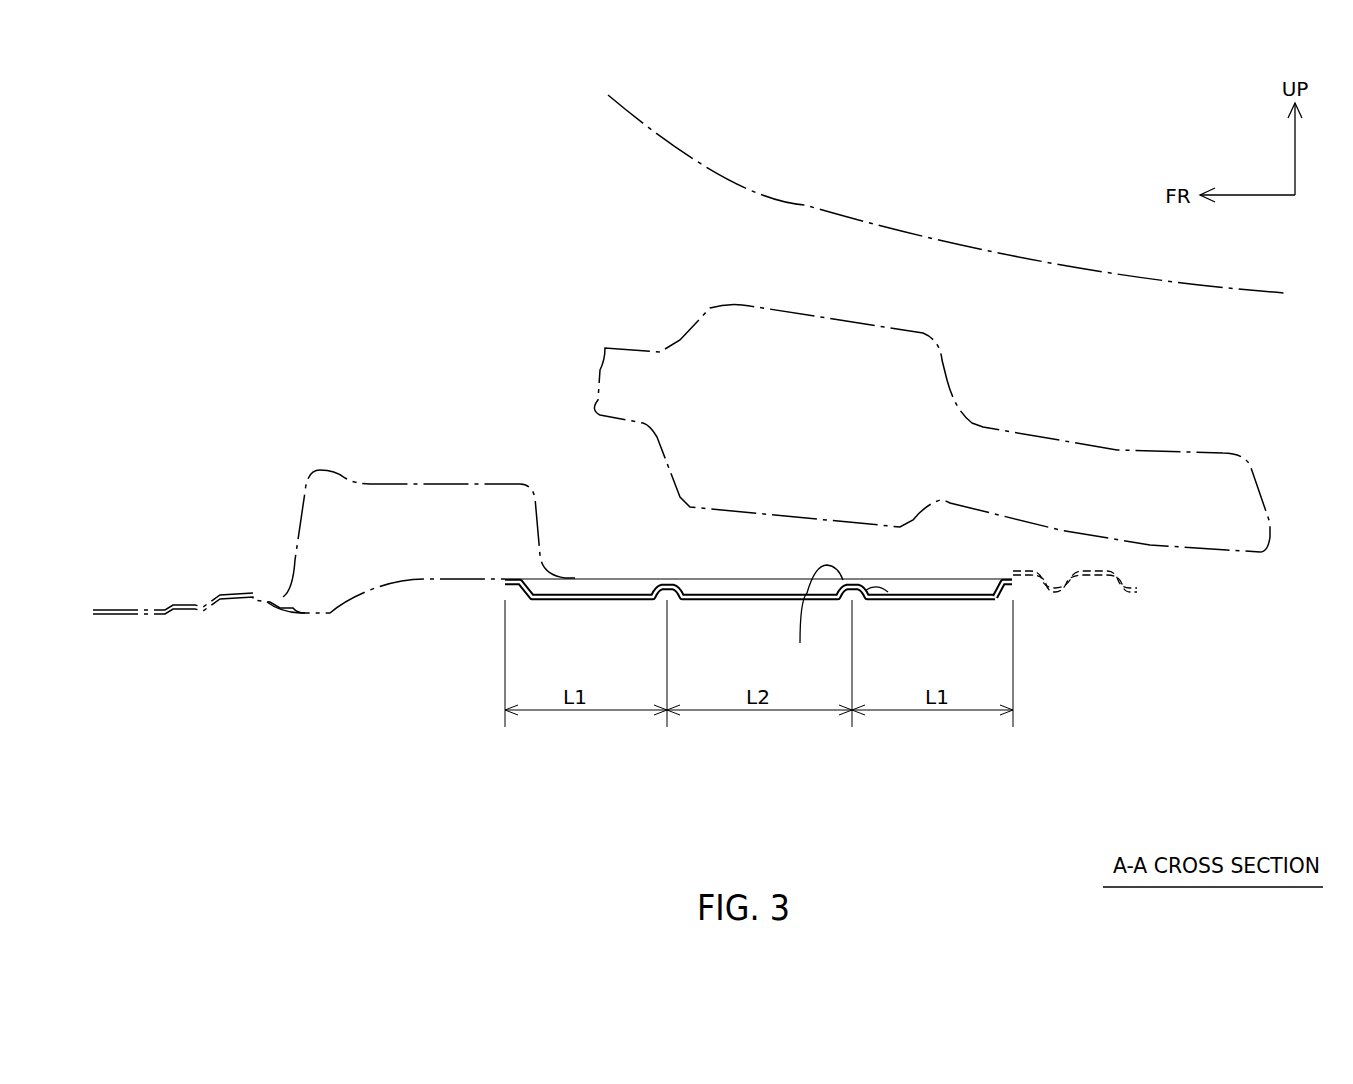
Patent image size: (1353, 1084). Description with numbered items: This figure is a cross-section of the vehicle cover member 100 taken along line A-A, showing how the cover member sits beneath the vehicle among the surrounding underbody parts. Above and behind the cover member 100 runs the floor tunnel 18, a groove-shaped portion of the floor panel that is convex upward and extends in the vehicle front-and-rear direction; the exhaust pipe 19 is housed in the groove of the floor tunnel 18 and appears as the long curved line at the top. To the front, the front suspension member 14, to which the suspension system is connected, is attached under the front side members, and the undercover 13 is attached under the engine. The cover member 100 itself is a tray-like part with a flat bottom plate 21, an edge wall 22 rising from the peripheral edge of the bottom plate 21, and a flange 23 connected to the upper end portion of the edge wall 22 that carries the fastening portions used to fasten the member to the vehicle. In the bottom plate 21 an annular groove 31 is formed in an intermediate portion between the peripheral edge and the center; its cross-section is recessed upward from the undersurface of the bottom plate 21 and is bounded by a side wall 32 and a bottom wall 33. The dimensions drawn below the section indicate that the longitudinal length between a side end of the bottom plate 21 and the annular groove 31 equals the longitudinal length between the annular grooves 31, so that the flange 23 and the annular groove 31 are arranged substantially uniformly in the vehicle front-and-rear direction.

The undercover 13 is at (142, 613).
The front suspension member 14 is at (343, 473).
The floor tunnel 18 is at (1032, 438).
The exhaust pipe 19 is at (805, 205).
The vehicle cover member 100 is at (774, 694).
The bottom plate 21 is at (940, 602).
The edge wall 22 is at (993, 598).
The flange 23 is at (1010, 587).
The annular groove 31 is at (852, 597).
The side wall 32 is at (890, 597).
The bottom wall 33 is at (800, 643).